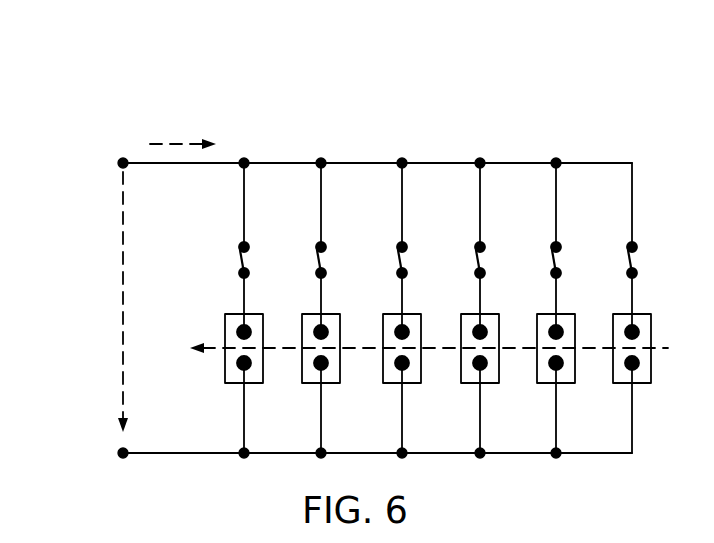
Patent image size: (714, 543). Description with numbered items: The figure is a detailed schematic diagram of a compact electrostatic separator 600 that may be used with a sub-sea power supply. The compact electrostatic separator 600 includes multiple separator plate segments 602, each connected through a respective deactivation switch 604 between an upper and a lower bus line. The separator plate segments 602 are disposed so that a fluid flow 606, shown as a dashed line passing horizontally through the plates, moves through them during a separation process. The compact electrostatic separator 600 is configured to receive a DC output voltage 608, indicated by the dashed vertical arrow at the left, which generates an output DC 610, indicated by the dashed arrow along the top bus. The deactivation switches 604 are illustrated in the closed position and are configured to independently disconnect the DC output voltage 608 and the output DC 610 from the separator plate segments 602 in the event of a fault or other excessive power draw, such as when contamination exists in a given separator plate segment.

The compact electrostatic separator 600 is at (116, 56).
The separator plate segments 602 is at (452, 363).
The deactivation switches 604 is at (458, 220).
The fluid flow 606 is at (213, 356).
The DC output voltage 608 is at (125, 302).
The output DC 610 is at (168, 142).